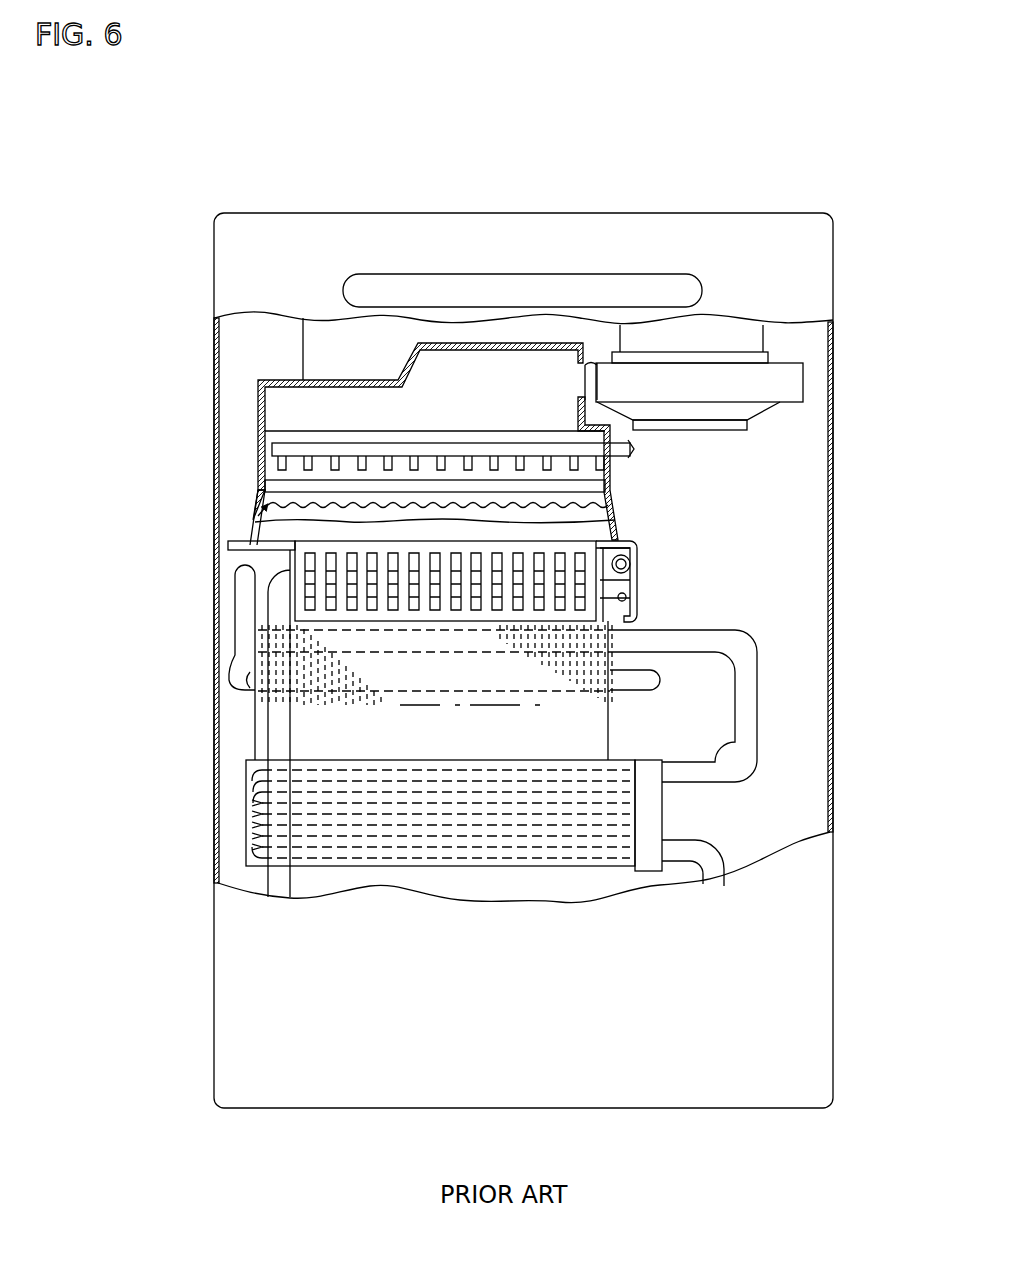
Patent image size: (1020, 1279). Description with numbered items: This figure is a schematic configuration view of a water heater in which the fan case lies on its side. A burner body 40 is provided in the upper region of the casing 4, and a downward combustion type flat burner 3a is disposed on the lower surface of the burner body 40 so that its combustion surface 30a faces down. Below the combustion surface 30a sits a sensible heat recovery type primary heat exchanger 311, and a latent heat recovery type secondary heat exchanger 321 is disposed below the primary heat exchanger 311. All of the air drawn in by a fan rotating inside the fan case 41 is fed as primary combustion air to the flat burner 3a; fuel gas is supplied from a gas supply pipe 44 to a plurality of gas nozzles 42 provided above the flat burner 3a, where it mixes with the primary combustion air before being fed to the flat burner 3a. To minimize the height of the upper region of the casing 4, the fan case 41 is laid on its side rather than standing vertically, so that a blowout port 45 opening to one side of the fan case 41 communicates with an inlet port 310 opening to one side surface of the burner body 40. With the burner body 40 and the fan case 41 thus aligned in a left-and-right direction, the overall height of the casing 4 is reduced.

The casing 4 is at (833, 283).
The burner body 40 is at (258, 410).
The fan case 41 is at (833, 375).
The gas nozzles 42 is at (420, 468).
The gas supply pipe 44 is at (635, 449).
The blowout port 45 is at (596, 393).
The flat burner 3a is at (270, 488).
The combustion surface 30a is at (257, 522).
The inlet port 310 is at (576, 381).
The primary heat exchanger 311 is at (356, 625).
The secondary heat exchanger 321 is at (309, 761).